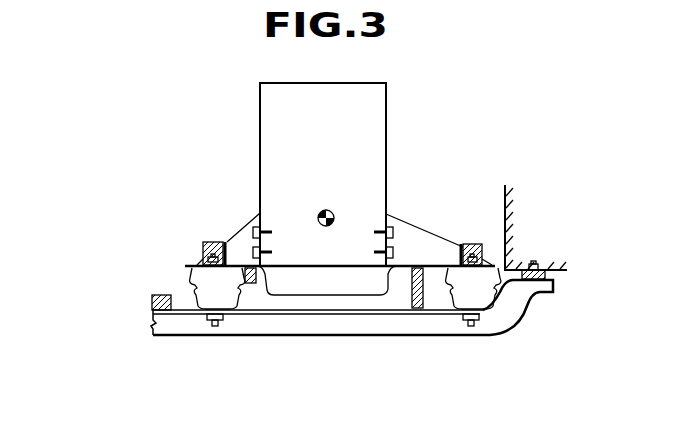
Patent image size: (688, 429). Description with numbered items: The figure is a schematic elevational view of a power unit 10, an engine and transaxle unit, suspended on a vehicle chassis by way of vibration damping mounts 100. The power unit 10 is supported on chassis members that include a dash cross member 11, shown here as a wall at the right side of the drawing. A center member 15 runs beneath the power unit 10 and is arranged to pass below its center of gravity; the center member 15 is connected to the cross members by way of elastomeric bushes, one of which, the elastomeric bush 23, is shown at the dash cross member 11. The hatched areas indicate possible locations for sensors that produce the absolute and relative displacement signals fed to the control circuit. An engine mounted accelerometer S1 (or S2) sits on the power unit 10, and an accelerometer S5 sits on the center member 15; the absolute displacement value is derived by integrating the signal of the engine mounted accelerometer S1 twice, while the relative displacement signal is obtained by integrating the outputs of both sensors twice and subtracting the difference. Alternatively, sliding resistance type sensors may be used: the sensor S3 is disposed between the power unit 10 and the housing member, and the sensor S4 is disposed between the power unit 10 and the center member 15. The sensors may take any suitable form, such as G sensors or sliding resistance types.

The power unit 10 is at (245, 140).
The dash cross member 11 is at (505, 205).
The center member 15 is at (420, 325).
The elastomeric bush 23 is at (545, 279).
The vibration damping mount 100 is at (187, 292).
The engine mounted accelerometer S1 is at (212, 242).
The engine mounted accelerometer S2 is at (472, 244).
The sliding resistance type sensor S3 is at (250, 284).
The sliding resistance type sensor S4 is at (412, 290).
The accelerometer S5 is at (150, 303).